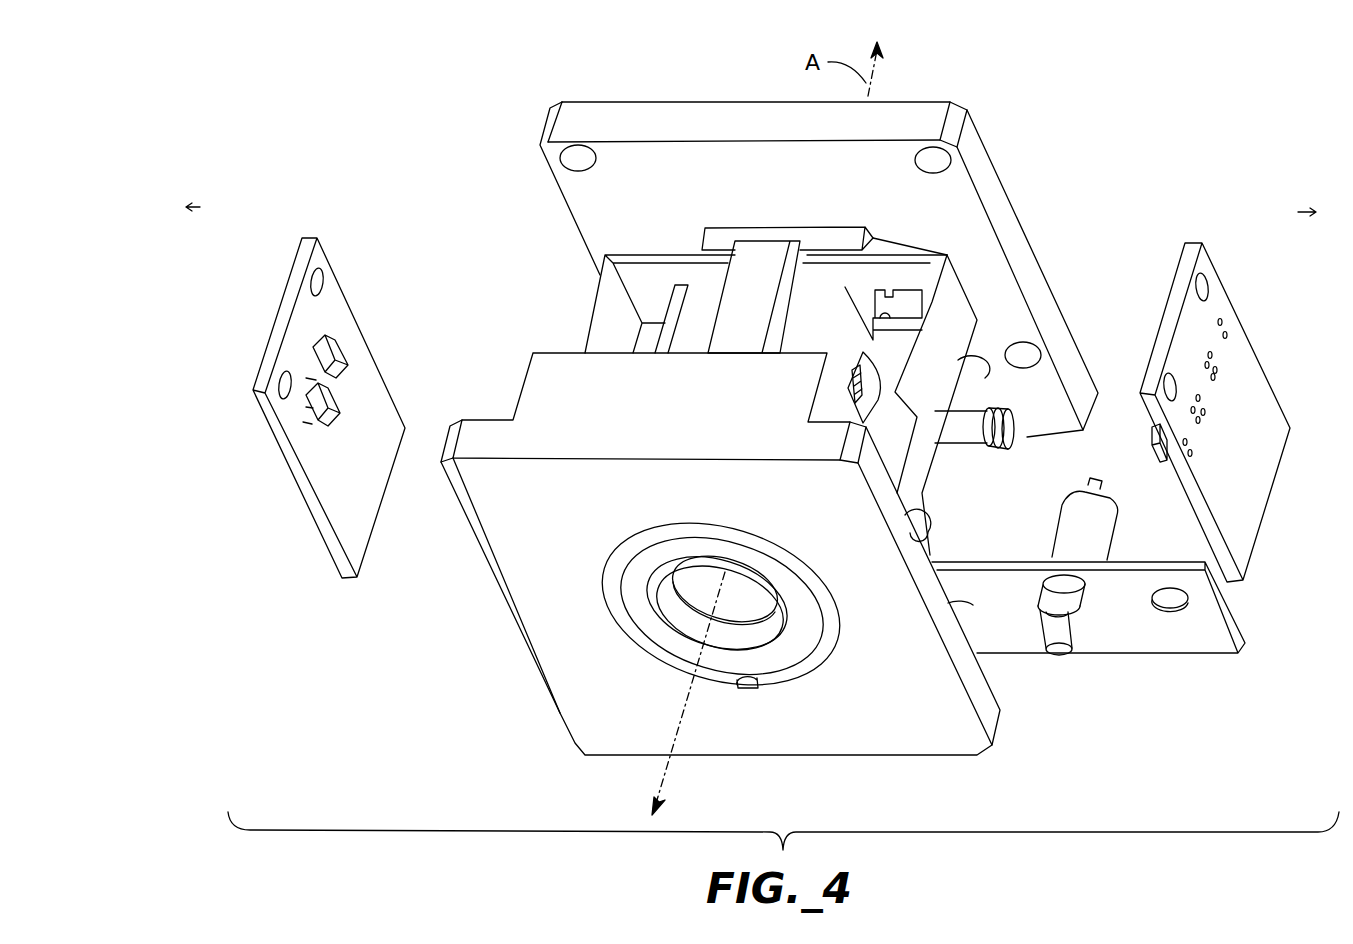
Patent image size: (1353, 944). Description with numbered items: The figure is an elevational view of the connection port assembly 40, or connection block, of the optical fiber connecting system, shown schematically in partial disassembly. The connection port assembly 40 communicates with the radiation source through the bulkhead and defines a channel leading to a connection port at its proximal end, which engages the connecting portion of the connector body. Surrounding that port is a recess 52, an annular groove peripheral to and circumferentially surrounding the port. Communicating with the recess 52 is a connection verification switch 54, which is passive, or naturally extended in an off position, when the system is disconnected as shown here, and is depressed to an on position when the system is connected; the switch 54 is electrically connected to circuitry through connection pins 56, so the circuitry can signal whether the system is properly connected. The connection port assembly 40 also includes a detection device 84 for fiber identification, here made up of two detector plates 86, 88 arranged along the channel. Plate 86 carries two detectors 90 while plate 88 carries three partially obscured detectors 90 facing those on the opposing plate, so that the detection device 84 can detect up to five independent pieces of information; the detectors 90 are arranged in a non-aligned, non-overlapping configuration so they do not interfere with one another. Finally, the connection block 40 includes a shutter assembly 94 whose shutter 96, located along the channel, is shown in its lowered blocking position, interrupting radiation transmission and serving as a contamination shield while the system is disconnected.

The connection port assembly 40 is at (938, 82).
The recess 52 is at (817, 640).
The connection verification switch 54 is at (1050, 654).
The connection pins 56 is at (1082, 492).
The detection device 84 is at (308, 236).
The detector plate 86 is at (357, 518).
The detector plate 88 is at (1240, 362).
The detector 90 is at (350, 395).
The shutter assembly 94 is at (582, 305).
The shutter 96 is at (628, 280).